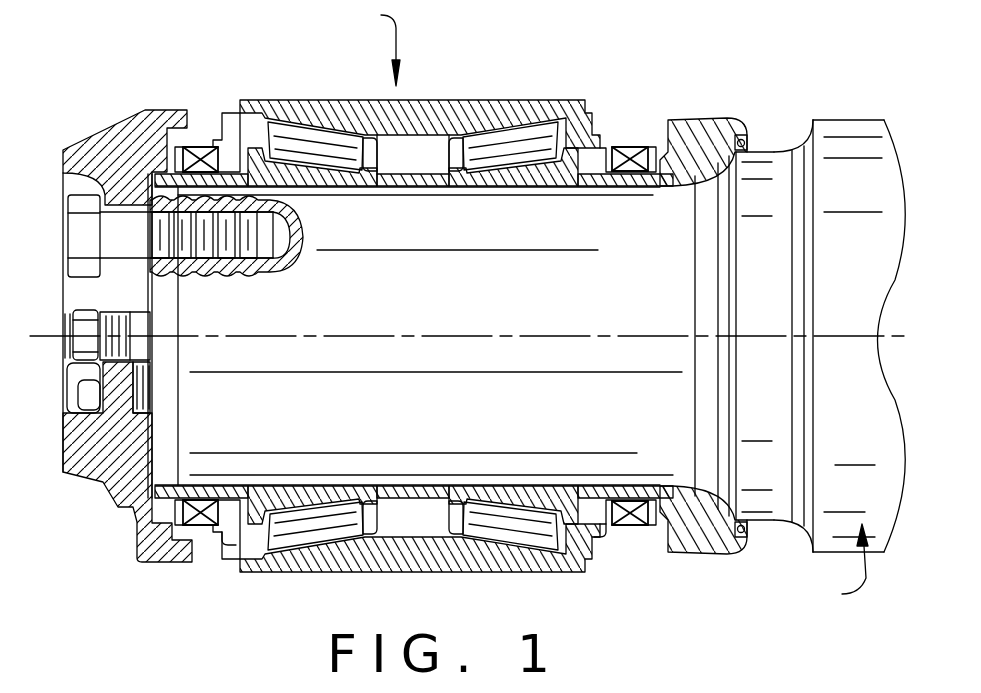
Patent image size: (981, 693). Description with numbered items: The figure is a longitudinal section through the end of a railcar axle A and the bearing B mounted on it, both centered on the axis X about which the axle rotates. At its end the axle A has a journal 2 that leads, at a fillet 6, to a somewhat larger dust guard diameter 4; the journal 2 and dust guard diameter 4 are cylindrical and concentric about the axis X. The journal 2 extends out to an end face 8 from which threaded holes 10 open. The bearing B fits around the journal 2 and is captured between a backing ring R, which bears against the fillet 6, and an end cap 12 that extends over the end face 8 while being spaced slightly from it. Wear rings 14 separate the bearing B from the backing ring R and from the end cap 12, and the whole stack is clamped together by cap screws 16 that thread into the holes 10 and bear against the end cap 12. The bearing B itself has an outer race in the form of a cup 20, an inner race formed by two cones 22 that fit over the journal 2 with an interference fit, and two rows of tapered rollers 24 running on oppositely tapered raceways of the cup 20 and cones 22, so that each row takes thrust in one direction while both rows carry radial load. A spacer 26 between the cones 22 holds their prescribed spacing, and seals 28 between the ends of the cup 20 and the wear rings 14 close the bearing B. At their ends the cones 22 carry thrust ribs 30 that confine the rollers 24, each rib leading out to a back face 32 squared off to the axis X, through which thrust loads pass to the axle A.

The journal 2 is at (368, 413).
The dust guard diameter 4 is at (772, 138).
The fillet 6 is at (713, 285).
The end face 8 is at (97, 474).
The threaded holes 10 is at (229, 252).
The end cap 12 is at (128, 128).
The wear rings 14 is at (216, 492).
The cap screws 16 is at (87, 237).
The cup 20 is at (432, 100).
The cones 22 is at (317, 188).
The tapered rollers 24 is at (336, 128).
The spacer 26 is at (403, 188).
The seals 28 is at (203, 143).
The thrust ribs 30 is at (236, 540).
The back face 32 is at (208, 526).
The railcar axle A is at (843, 566).
The bearing B is at (379, 45).
The backing ring R is at (708, 100).
The axis X is at (483, 337).